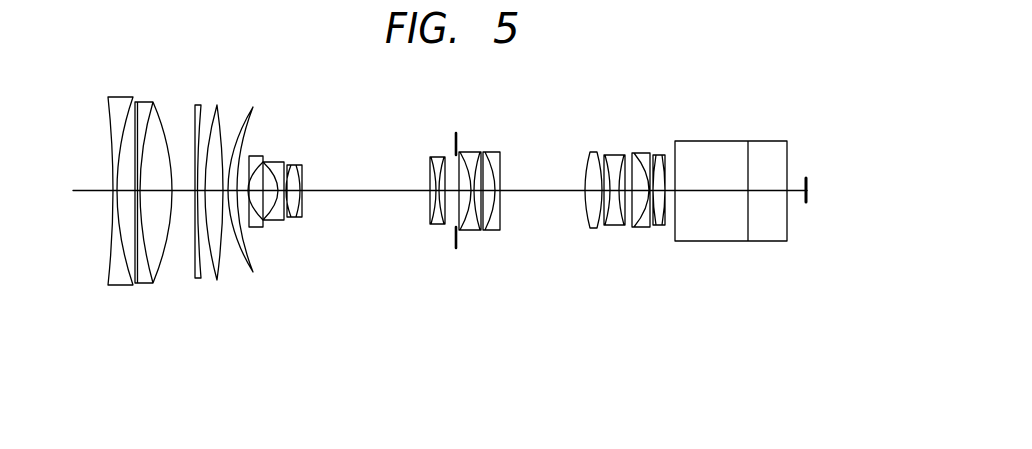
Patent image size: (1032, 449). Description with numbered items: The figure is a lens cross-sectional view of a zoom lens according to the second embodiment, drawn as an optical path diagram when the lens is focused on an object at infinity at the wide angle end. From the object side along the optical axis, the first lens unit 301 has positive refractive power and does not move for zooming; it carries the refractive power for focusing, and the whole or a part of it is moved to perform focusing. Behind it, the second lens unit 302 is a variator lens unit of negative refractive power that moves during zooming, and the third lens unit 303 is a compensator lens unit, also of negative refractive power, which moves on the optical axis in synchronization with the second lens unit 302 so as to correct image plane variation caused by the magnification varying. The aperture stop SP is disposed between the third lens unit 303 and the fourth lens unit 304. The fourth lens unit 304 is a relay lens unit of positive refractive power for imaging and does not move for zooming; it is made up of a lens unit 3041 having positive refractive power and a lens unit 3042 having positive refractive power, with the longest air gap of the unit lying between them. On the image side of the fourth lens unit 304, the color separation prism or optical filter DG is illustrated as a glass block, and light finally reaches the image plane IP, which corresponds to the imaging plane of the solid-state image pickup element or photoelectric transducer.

The first lens unit 301 is at (265, 310).
The second lens unit 302 is at (312, 310).
The third lens unit 303 is at (460, 310).
The fourth lens unit 304 is at (564, 260).
The lens unit 3041 is at (505, 253).
The lens unit 3042 is at (624, 230).
The aperture stop SP is at (455, 142).
The color separation prism or optical filter DG is at (703, 140).
The image plane IP is at (807, 177).